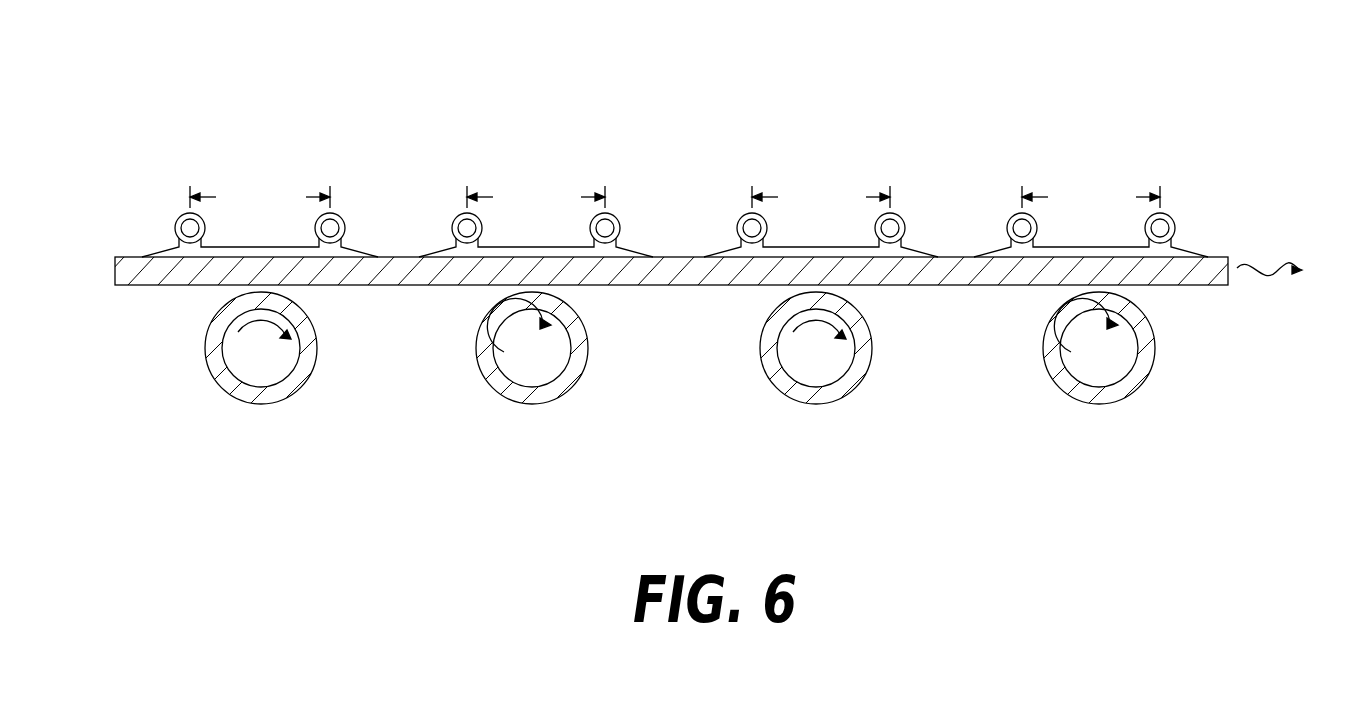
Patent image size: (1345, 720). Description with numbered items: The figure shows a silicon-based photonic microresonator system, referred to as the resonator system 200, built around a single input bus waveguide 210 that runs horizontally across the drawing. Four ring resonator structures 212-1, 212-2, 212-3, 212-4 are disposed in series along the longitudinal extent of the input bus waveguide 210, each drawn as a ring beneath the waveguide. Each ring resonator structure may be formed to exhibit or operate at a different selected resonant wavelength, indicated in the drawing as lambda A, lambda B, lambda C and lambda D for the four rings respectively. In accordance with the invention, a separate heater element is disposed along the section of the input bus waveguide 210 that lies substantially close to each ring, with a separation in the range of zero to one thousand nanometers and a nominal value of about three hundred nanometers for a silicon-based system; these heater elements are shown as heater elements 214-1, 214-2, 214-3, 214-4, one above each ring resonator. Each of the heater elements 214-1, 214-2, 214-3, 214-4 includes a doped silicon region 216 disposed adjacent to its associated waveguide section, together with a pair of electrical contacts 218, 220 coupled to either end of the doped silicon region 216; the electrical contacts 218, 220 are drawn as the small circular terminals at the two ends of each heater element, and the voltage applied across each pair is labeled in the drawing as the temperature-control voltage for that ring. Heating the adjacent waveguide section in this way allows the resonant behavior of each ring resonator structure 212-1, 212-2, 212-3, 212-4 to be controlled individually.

The resonator system 200 is at (300, 50).
The input bus waveguide 210 is at (133, 266).
The ring resonator structure 212-1 is at (222, 391).
The ring resonator structure 212-2 is at (507, 395).
The ring resonator structure 212-3 is at (785, 393).
The ring resonator structure 212-4 is at (1057, 393).
The heater element 214-1 is at (267, 182).
The heater element 214-2 is at (537, 182).
The heater element 214-3 is at (825, 173).
The heater element 214-4 is at (1097, 182).
The doped silicon region 216 is at (730, 254).
The electrical contact 218 is at (738, 223).
The electrical contact 220 is at (910, 229).